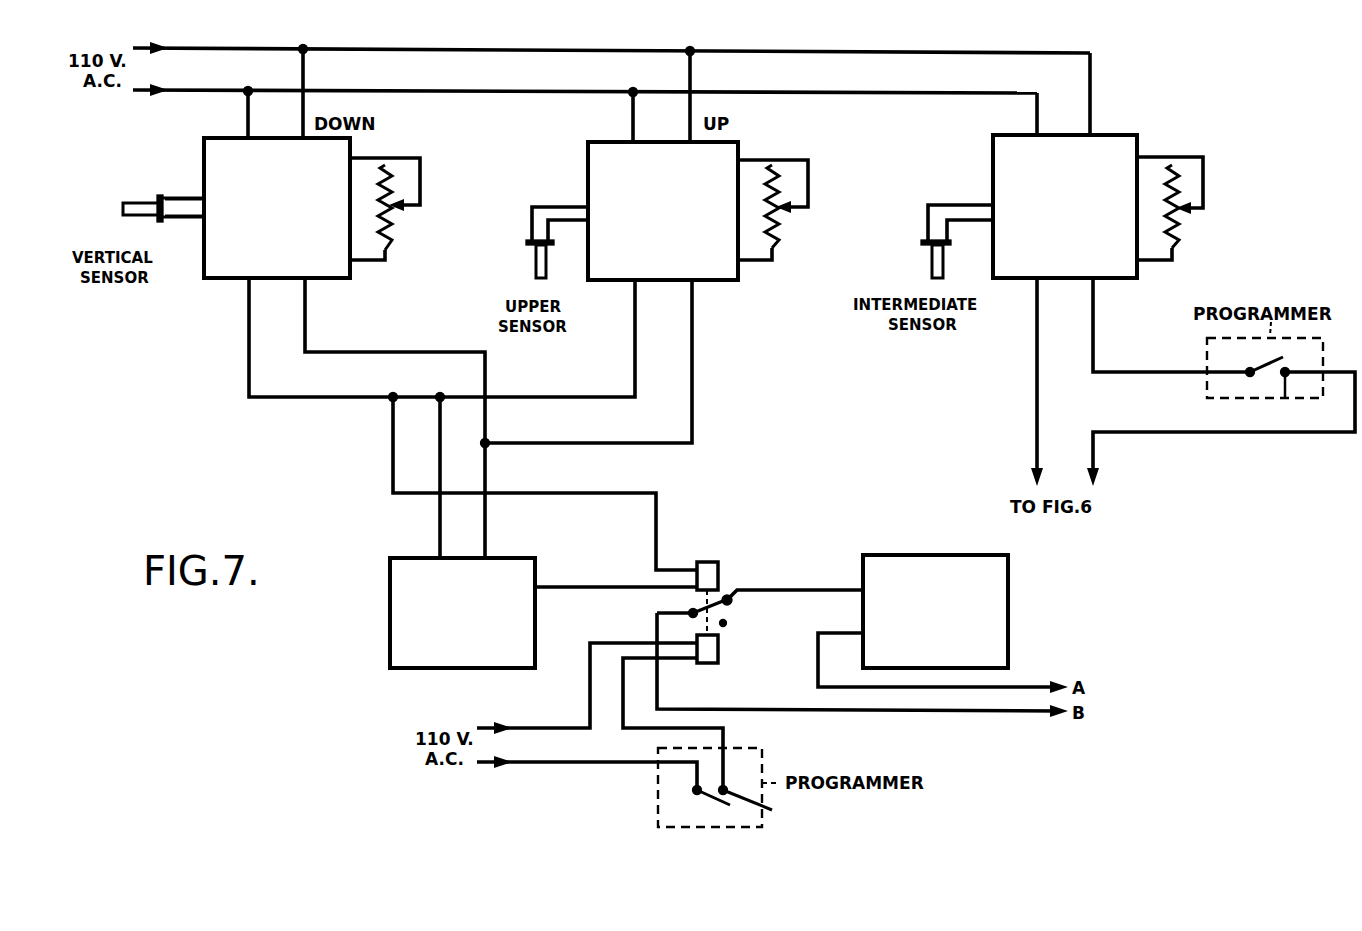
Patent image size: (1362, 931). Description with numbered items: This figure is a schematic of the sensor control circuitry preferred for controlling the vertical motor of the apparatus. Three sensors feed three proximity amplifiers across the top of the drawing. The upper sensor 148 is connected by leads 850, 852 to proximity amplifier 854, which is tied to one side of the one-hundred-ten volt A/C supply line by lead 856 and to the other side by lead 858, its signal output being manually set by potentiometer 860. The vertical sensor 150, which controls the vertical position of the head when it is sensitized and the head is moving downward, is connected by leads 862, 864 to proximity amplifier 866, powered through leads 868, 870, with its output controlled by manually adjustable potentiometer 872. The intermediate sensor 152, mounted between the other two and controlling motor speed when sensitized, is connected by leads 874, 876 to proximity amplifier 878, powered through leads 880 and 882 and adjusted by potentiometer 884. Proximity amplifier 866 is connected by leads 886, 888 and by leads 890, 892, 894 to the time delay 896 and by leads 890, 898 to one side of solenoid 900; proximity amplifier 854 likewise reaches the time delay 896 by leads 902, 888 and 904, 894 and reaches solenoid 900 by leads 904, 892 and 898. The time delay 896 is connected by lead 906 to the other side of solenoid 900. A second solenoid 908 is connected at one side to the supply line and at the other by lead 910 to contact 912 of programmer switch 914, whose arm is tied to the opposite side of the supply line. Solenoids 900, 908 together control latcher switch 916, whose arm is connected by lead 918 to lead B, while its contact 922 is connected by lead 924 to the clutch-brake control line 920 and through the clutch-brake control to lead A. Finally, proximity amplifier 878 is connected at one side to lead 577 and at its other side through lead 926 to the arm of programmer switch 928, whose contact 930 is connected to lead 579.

The sensor 148 is at (536, 268).
The sensor 150 is at (133, 198).
The sensor 152 is at (932, 263).
The lead 577 is at (1035, 435).
The lead 579 is at (1093, 458).
The lead 850 is at (553, 207).
The lead 852 is at (570, 226).
The proximity amplifier 854 is at (727, 283).
The lead 856 is at (690, 75).
The lead 858 is at (633, 117).
The potentiometer 860 is at (790, 226).
The lead 862 is at (180, 198).
The lead 864 is at (185, 218).
The proximity amplifier 866 is at (231, 281).
The lead 868 is at (303, 75).
The lead 870 is at (248, 112).
The potentiometer 872 is at (404, 226).
The lead 874 is at (957, 205).
The lead 876 is at (972, 228).
The proximity amplifier 878 is at (1127, 135).
The lead 880 is at (1090, 68).
The lead 882 is at (1037, 113).
The potentiometer 884 is at (1190, 226).
The lead 886 is at (366, 352).
The lead 888 is at (485, 525).
The lead 890 is at (249, 363).
The lead 892 is at (413, 397).
The lead 894 is at (440, 525).
The time delay 896 is at (390, 617).
The lead 898 is at (393, 450).
The solenoid 900 is at (718, 575).
The lead 902 is at (692, 377).
The lead 904 is at (635, 360).
The lead 906 is at (598, 587).
The solenoid 908 is at (718, 648).
The lead 910 is at (693, 665).
The contact 912 is at (760, 809).
The programmer switch 914 is at (722, 808).
The latcher switch 916 is at (693, 611).
The lead 918 is at (762, 710).
The clutch-brake control line 920 is at (1008, 600).
The contact 922 is at (733, 600).
The lead 924 is at (804, 588).
The lead 926 is at (1093, 332).
The programmer switch 928 is at (1251, 362).
The contact 930 is at (1286, 398).